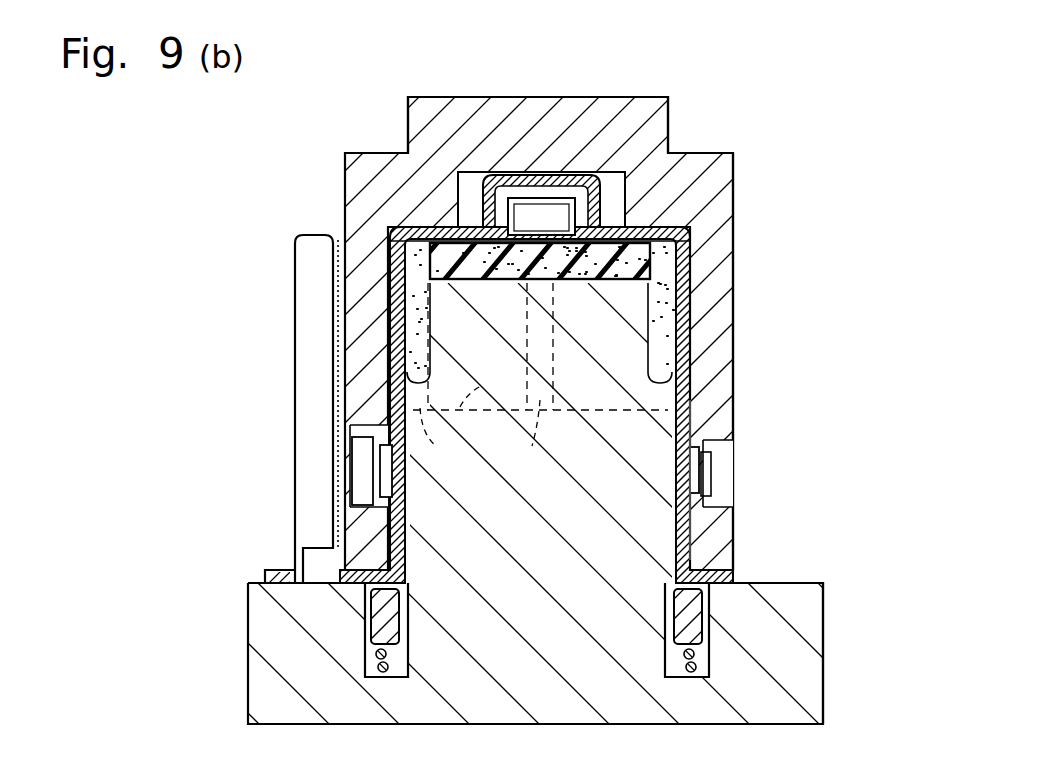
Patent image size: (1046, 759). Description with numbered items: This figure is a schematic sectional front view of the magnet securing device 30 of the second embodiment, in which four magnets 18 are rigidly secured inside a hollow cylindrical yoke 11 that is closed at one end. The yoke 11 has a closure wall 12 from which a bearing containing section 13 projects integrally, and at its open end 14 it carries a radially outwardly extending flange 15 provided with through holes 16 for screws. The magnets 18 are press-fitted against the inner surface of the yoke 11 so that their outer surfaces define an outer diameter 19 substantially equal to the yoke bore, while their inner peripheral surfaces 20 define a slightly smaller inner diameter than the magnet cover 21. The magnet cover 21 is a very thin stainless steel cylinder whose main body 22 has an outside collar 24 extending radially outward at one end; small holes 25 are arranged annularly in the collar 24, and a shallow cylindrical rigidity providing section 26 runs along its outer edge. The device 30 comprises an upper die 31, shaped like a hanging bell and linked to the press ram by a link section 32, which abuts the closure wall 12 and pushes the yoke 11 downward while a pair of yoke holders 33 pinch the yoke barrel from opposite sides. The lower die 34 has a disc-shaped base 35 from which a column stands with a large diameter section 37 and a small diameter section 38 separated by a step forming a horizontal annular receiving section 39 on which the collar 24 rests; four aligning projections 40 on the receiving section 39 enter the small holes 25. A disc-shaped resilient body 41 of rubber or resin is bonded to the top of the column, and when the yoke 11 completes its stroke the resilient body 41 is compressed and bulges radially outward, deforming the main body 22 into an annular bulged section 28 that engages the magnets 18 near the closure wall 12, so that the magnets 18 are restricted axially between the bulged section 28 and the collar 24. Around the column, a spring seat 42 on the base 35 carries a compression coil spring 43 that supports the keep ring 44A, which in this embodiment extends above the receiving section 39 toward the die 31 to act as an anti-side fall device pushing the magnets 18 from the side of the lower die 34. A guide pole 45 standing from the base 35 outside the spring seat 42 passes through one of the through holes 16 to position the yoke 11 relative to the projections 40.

The yoke 11 is at (392, 288).
The closure wall 12 is at (683, 153).
The bearing containing section 13 is at (548, 176).
The open end 14 is at (410, 583).
The flange 15 is at (273, 590).
The through holes 16 is at (298, 572).
The magnets 18 is at (408, 278).
The outer diameter 19 is at (690, 314).
The inner peripheral surfaces 20 is at (650, 313).
The magnet cover 21 is at (645, 356).
The main body 22 is at (640, 477).
The outside collar 24 is at (540, 385).
The small holes 25 is at (667, 407).
The rigidity providing section 26 is at (713, 395).
The bulged section for axial alignment 28 is at (705, 238).
The magnet securing device 30 is at (263, 181).
The upper die 31 is at (737, 173).
The link section 32 is at (668, 120).
The yoke holders 33 is at (357, 462).
The lower die 34 is at (825, 609).
The base 35 is at (823, 632).
The large diameter section 37 is at (633, 547).
The small diameter section 38 is at (463, 307).
The receiving section 39 is at (480, 387).
The aligning projections 40 is at (773, 340).
The resilient body 41 is at (693, 263).
The spring seat 42 is at (403, 653).
The compression coil spring 43 is at (717, 657).
The keep ring 44A is at (697, 607).
The guide pole 45 is at (310, 387).